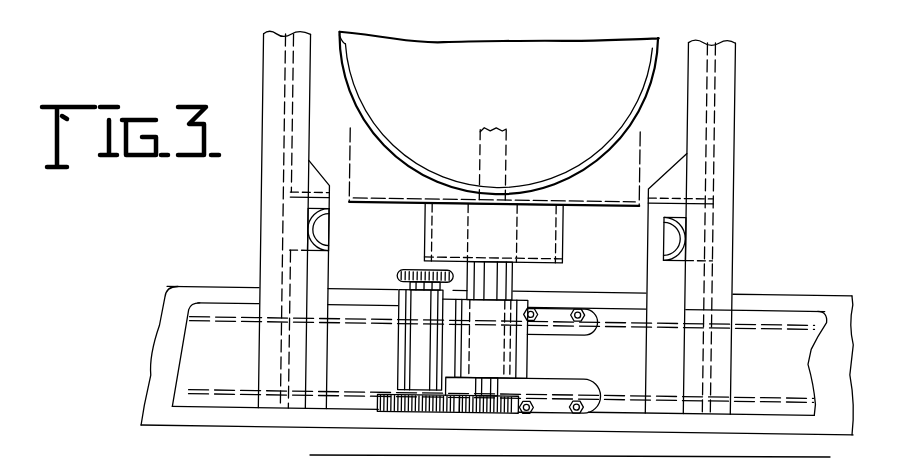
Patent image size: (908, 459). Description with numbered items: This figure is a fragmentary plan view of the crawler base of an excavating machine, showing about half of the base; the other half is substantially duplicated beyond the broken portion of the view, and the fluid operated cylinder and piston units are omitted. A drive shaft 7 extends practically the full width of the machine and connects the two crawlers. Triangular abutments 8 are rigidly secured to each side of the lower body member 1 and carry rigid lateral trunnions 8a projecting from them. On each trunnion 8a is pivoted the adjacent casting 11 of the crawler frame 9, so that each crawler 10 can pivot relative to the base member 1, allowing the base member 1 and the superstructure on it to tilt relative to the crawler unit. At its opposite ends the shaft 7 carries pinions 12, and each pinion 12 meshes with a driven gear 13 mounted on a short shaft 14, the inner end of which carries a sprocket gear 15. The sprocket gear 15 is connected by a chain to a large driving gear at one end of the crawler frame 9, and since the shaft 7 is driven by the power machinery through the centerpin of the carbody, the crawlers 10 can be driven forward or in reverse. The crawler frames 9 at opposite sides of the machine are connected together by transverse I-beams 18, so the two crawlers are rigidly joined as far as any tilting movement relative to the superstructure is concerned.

The lower body member 1 is at (622, 102).
The drive shaft 7 is at (509, 152).
The triangular abutment 8 is at (557, 227).
The lateral trunnion 8a is at (515, 272).
The crawler frame 9 is at (808, 373).
The crawler 10 is at (842, 318).
The casting 11 is at (516, 354).
The pinion 12 is at (502, 415).
The driven gear 13 is at (399, 416).
The short shaft 14 is at (421, 394).
The sprocket gear 15 is at (420, 273).
The transverse I-beam 18 is at (261, 214).